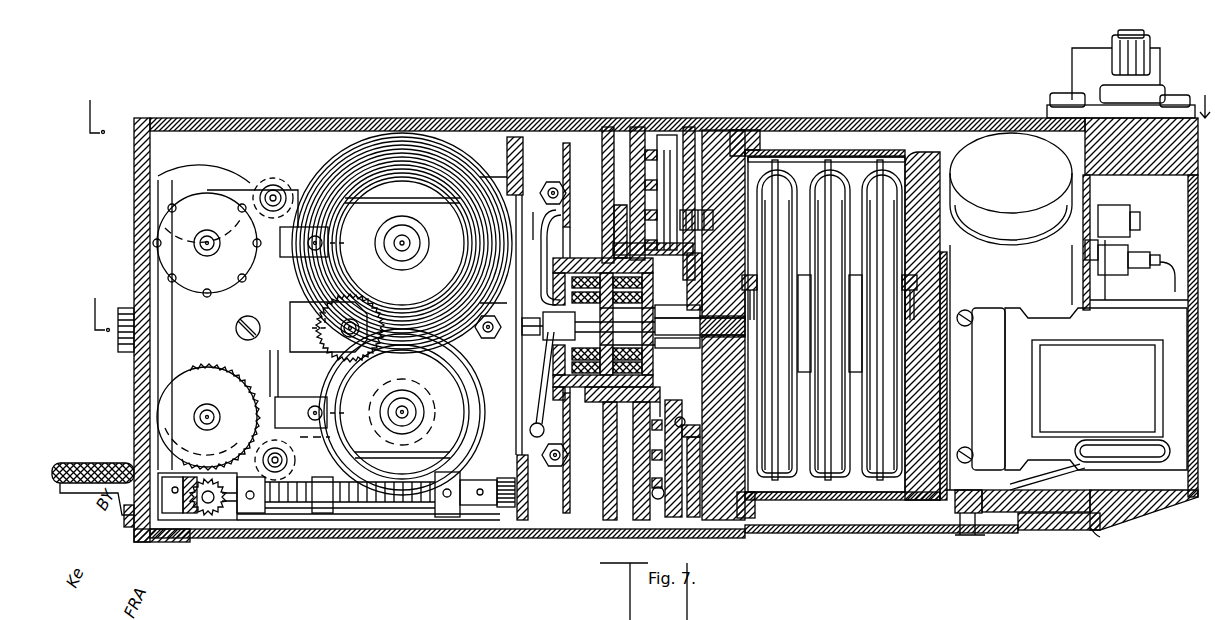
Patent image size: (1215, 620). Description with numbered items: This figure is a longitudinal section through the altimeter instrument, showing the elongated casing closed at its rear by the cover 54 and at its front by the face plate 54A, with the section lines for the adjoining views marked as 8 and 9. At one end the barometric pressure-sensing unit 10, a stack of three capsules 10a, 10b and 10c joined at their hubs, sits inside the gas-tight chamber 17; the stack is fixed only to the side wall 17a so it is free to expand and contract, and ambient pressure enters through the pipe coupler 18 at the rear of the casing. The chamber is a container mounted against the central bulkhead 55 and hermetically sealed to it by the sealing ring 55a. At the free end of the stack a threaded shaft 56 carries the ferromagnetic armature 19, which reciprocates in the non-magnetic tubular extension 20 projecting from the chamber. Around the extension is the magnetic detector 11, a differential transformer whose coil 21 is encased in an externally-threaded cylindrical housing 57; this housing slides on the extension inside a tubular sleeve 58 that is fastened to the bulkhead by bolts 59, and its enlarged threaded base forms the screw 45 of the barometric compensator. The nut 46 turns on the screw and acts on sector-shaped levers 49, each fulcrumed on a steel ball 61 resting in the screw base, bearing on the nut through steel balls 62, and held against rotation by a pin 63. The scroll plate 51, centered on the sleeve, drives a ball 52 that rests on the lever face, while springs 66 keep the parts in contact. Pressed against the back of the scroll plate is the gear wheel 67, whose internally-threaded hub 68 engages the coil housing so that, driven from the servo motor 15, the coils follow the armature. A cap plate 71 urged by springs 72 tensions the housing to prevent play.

The section line 8- 8 is at (648, 126).
The section line 9- 9 is at (310, 262).
The barometric pressure-sensing unit 10 is at (816, 486).
The capsule 10a is at (888, 180).
The capsule 10b is at (838, 175).
The end capsule 10c is at (780, 175).
The magnetic pressure-responsive detector 11 is at (595, 390).
The servo motor 15 is at (997, 142).
The gas-tight chamber 17 is at (808, 165).
The side wall of the chamber 17a is at (927, 160).
The pipe coupler 18 is at (1152, 48).
The ferromagnetic armature 19 is at (677, 361).
The tubular extension 20 is at (657, 276).
The coil 21 is at (588, 326).
The screw of the barometric compensator 45 is at (690, 432).
The nut 46 is at (690, 127).
The lever 49 is at (665, 452).
The scroll plate 51 is at (610, 522).
The ball 52 is at (640, 522).
The cover 54 is at (1103, 537).
The face plate 54A is at (135, 396).
The bulkhead 55 is at (722, 130).
The sealing ring 55a is at (757, 505).
The threaded shaft 56 is at (656, 338).
The externally-threaded cylindrical housing 57 is at (584, 258).
The tubular sleeve 58 is at (660, 310).
The bolt 59 is at (712, 222).
The steel ball 61 is at (686, 420).
The steel ball 62 is at (692, 520).
The pin 63 is at (658, 500).
The spring 66 is at (668, 200).
The gear wheel 67 is at (606, 127).
The hub 68 is at (617, 190).
The cap plate 71 is at (555, 365).
The spring 72 is at (608, 270).